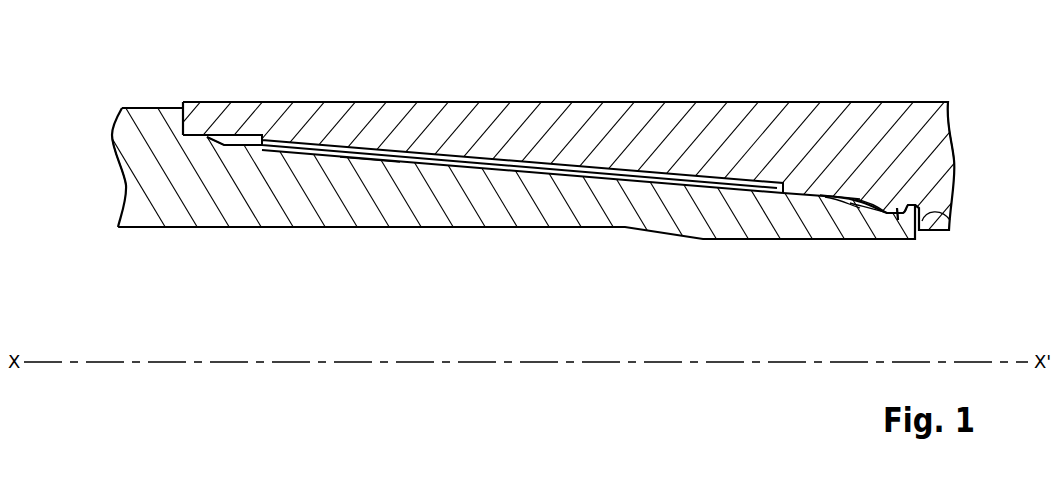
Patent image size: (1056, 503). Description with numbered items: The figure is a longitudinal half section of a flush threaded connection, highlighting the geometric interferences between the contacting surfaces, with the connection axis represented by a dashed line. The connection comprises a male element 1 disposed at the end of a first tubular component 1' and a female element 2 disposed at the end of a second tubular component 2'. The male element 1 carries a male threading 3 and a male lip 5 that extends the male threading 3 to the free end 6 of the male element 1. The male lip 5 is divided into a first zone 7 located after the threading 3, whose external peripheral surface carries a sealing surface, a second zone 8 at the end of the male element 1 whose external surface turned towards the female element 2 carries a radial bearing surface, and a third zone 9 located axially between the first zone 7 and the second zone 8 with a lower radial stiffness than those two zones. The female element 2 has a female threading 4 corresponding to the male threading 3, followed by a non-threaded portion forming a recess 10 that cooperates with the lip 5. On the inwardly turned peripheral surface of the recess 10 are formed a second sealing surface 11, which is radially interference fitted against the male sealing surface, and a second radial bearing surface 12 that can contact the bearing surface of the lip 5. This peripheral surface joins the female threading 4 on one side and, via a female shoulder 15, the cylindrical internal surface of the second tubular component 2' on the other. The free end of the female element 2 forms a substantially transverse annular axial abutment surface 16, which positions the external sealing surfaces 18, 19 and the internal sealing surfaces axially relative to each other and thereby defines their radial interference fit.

The male element 1 is at (534, 183).
The first tubular component 1' is at (91, 163).
The female element 2 is at (545, 136).
The second tubular component 2' is at (980, 140).
The male threading 3 is at (373, 158).
The female threading 4 is at (428, 150).
The male lip 5 is at (838, 213).
The free end 6 is at (915, 240).
The first zone 7 is at (862, 205).
The second zone 8 is at (907, 212).
The third zone 9 is at (891, 212).
The recess 10 is at (842, 193).
The second sealing surface 11 is at (867, 197).
The second radial bearing surface 12 is at (906, 205).
The female shoulder 15 is at (955, 222).
The annular axial abutment surface 16 is at (183, 124).
The external sealing surface 18 is at (199, 138).
The external sealing surface 19 is at (183, 135).